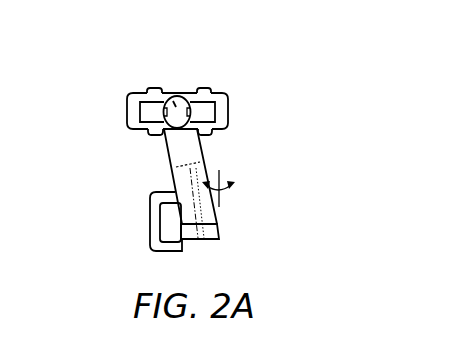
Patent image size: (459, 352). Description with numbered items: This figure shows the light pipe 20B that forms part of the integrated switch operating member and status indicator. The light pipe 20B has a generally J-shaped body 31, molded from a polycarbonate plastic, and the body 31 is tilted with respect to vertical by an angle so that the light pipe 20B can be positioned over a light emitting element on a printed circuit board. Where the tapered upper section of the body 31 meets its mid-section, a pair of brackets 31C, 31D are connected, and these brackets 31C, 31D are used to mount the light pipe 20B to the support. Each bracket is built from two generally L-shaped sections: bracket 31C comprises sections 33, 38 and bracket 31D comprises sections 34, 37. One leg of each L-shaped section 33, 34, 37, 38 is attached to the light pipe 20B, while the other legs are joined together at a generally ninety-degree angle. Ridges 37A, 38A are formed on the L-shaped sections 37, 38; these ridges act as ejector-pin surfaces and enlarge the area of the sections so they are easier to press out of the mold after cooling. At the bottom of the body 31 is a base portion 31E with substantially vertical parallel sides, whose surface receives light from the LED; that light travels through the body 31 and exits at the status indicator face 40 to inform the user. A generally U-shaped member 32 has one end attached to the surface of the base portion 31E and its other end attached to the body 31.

The light pipe 20B is at (245, 33).
The body 31 is at (220, 200).
The bracket 31C is at (115, 128).
The bracket 31D is at (237, 128).
The base portion 31E is at (221, 240).
The U-shaped member 32 is at (152, 252).
The L-shaped section 33 is at (155, 136).
The L-shaped section 34 is at (213, 137).
The L-shaped section 37 is at (228, 115).
The ridge 37A is at (200, 88).
The L-shaped section 38 is at (127, 110).
The ridge 38A is at (156, 88).
The status indicator face 40 is at (171, 97).